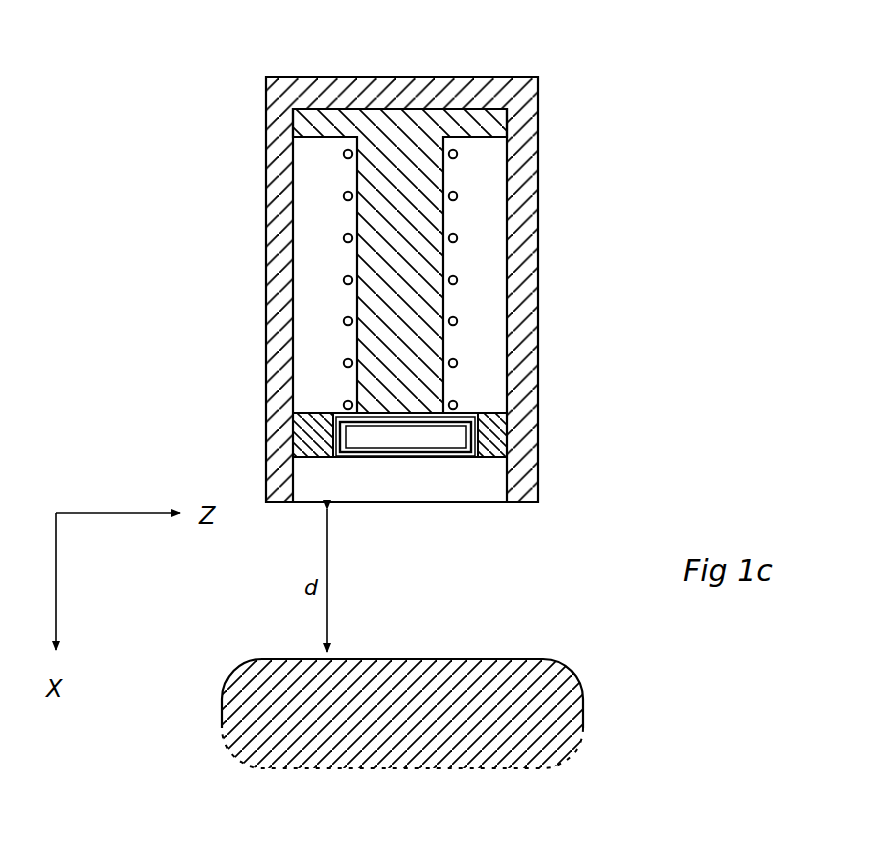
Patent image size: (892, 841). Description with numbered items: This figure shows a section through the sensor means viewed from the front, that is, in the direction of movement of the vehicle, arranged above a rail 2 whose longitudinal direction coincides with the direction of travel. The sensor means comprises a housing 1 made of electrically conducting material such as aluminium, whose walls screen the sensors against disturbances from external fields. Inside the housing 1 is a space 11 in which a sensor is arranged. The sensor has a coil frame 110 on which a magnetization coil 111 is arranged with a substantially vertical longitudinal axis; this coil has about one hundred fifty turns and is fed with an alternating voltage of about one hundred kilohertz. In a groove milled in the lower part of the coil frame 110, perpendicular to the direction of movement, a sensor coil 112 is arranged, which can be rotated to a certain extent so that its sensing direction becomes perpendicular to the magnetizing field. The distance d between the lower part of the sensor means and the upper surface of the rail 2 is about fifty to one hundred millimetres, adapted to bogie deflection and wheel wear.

The housing 1 is at (390, 279).
The coil frame 110 is at (329, 120).
The space 11 is at (488, 322).
The magnetization coil 111 is at (344, 321).
The sensor coil 112 is at (468, 437).
The rail 2 is at (580, 690).